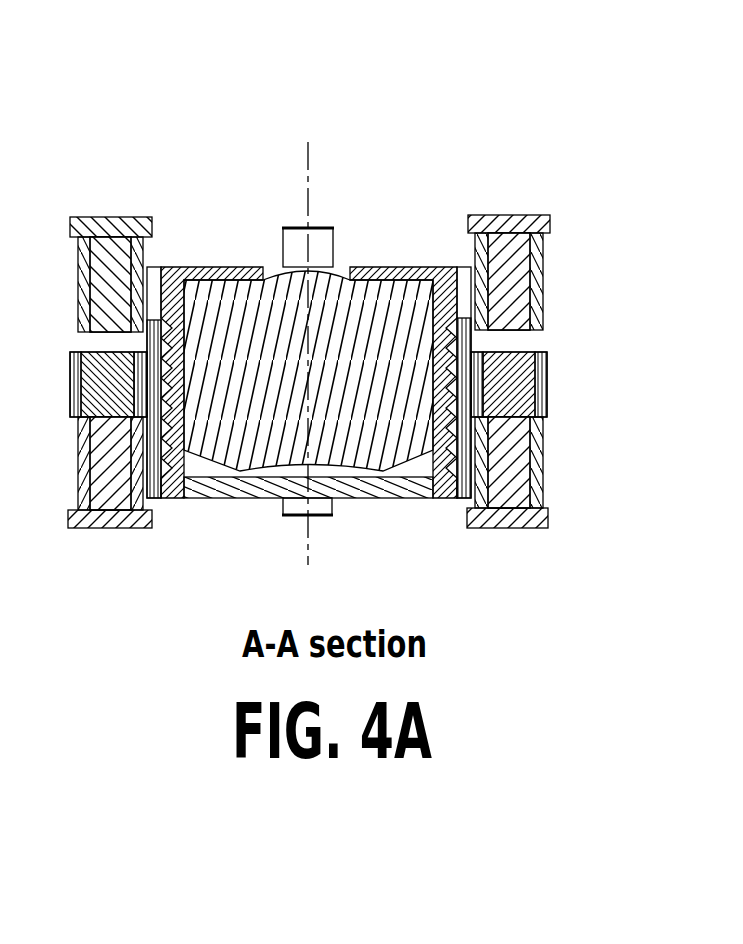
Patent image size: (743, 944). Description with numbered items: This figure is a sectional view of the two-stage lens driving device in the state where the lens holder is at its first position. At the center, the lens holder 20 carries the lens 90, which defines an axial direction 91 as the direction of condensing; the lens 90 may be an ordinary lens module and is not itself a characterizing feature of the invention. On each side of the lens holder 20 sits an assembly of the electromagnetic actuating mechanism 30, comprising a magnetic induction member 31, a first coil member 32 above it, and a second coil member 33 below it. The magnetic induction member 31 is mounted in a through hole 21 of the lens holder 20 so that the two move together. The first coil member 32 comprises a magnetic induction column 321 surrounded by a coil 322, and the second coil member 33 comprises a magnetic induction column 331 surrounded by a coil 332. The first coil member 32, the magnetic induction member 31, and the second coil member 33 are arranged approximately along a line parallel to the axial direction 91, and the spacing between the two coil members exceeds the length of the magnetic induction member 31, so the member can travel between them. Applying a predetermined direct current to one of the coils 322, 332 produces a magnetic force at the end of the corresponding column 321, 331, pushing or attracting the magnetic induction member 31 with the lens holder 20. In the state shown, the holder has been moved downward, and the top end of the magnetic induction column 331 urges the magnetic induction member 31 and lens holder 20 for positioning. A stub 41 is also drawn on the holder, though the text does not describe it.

The lens holder 20 is at (466, 497).
The through hole 21 is at (535, 372).
The electromagnetic actuating mechanism 30 is at (385, 289).
The magnetic induction member 31 is at (530, 348).
The first coil member 32 is at (581, 224).
The magnetic induction column 321 is at (528, 215).
The coil 322 is at (540, 260).
The second coil member 33 is at (585, 472).
The magnetic induction column 331 is at (512, 492).
The coil 332 is at (535, 463).
The positioning stub 41 is at (292, 250).
The lens 90 is at (382, 268).
The axial direction 91 is at (308, 166).